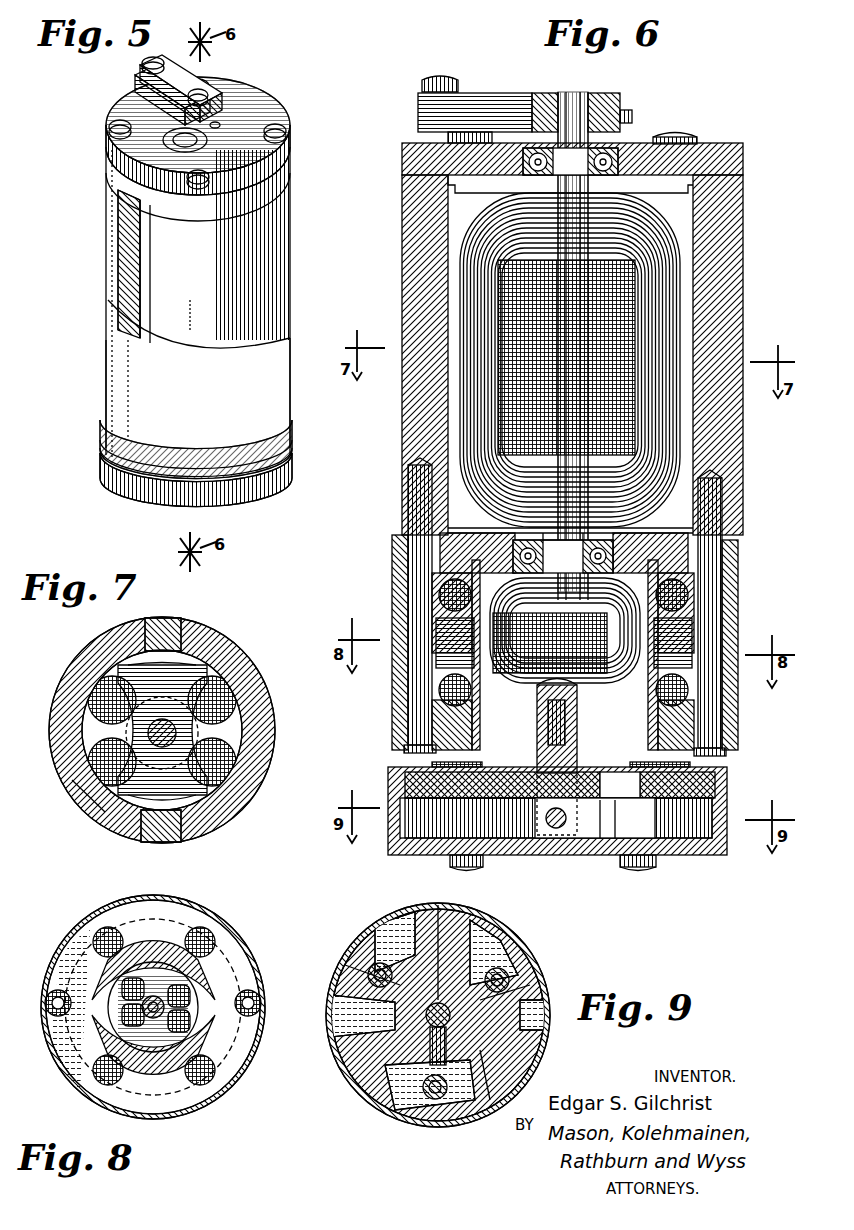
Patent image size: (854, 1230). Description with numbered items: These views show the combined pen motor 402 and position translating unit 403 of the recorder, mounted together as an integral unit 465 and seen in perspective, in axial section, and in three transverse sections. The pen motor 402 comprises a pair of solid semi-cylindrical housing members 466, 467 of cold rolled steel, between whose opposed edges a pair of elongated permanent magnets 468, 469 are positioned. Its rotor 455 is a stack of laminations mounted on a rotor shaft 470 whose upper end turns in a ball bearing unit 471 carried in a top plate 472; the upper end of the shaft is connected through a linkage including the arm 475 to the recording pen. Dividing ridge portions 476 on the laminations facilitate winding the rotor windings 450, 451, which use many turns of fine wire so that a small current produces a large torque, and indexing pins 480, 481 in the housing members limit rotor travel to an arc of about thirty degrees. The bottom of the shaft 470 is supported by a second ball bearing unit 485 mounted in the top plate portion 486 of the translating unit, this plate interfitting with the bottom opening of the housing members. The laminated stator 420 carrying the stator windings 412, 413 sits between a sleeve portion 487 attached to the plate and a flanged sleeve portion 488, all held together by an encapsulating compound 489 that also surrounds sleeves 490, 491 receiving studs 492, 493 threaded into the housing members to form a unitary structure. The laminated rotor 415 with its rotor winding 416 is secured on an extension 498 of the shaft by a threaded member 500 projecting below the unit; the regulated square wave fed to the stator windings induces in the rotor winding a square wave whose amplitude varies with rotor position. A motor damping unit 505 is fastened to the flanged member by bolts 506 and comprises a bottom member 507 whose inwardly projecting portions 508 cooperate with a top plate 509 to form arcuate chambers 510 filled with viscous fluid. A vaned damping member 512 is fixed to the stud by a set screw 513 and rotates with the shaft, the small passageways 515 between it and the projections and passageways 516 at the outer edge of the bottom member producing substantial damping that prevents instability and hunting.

In FIG. 5, the pen motor 402 is at (100, 171).
In FIG. 6, the pen motor 402 is at (796, 309).
In FIG. 7, the pen motor 402 is at (316, 779).
In FIG. 5, the position translating unit 403 is at (96, 363).
In FIG. 6, the position translating unit 403 is at (388, 671).
In FIG. 8, the position translating unit 403 is at (68, 1091).
In FIG. 6, the stator winding 412 is at (722, 586).
In FIG. 8, the stator winding 412 is at (210, 920).
In FIG. 6, the stator winding 413 is at (430, 590).
In FIG. 8, the stator winding 413 is at (95, 930).
In FIG. 6, the rotor 415 is at (625, 680).
In FIG. 8, the rotor 415 is at (146, 925).
In FIG. 6, the rotor winding 416 is at (565, 665).
In FIG. 8, the rotor winding 416 is at (190, 1005).
In FIG. 6, the stator 420 is at (722, 615).
In FIG. 8, the stator 420 is at (68, 950).
In FIG. 7, the rotor winding 450 is at (215, 690).
In FIG. 6, the rotor winding 451 is at (662, 240).
In FIG. 7, the rotor winding 451 is at (100, 757).
In FIG. 6, the rotor 455 is at (640, 422).
In FIG. 7, the rotor 455 is at (185, 668).
In FIG. 5, the integral unit 465 is at (293, 224).
In FIG. 6, the integral unit 465 is at (752, 264).
In FIG. 5, the semi-cylindrical housing member 466 is at (288, 262).
In FIG. 6, the semi-cylindrical housing member 466 is at (743, 285).
In FIG. 7, the semi-cylindrical housing member 466 is at (296, 690).
In FIG. 5, the semi-cylindrical housing member 467 is at (118, 265).
In FIG. 6, the semi-cylindrical housing member 467 is at (402, 285).
In FIG. 7, the semi-cylindrical housing member 467 is at (80, 652).
In FIG. 7, the permanent magnet 468 is at (158, 618).
In FIG. 5, the permanent magnet 469 is at (125, 290).
In FIG. 7, the permanent magnet 469 is at (141, 840).
In FIG. 5, the rotor shaft 470 is at (208, 98).
In FIG. 6, the rotor shaft 470 is at (584, 94).
In FIG. 7, the rotor shaft 470 is at (170, 718).
In FIG. 5, the ball bearing unit 471 is at (178, 146).
In FIG. 6, the ball bearing unit 471 is at (605, 148).
In FIG. 5, the top plate 472 is at (258, 108).
In FIG. 6, the top plate 472 is at (708, 160).
In FIG. 5, the arm 475 is at (135, 86).
In FIG. 6, the arm 475 is at (480, 93).
In FIG. 7, the dividing ridge portion 476 is at (108, 692).
In FIG. 5, the indexing pin 480 is at (188, 294).
In FIG. 7, the indexing pin 480 is at (248, 806).
In FIG. 5, the indexing pin 481 is at (104, 222).
In FIG. 7, the indexing pin 481 is at (85, 805).
In FIG. 6, the ball bearing unit 485 is at (612, 545).
In FIG. 6, the top plate portion 486 is at (495, 548).
In FIG. 6, the sleeve portion 487 is at (430, 605).
In FIG. 6, the flanged sleeve portion 488 is at (722, 712).
In FIG. 6, the encapsulating compound 489 is at (720, 735).
In FIG. 6, the sleeve 490 is at (404, 552).
In FIG. 8, the sleeve 490 is at (68, 962).
In FIG. 6, the sleeve 491 is at (722, 560).
In FIG. 8, the sleeve 491 is at (255, 992).
In FIG. 6, the stud 492 is at (404, 748).
In FIG. 8, the stud 492 is at (45, 1003).
In FIG. 6, the stud 493 is at (726, 760).
In FIG. 8, the stud 493 is at (262, 1003).
In FIG. 6, the shaft extension 498 is at (537, 722).
In FIG. 6, the threaded member 500 is at (537, 744).
In FIG. 9, the threaded member 500 is at (440, 903).
In FIG. 5, the motor damping unit 505 is at (92, 451).
In FIG. 6, the motor damping unit 505 is at (726, 850).
In FIG. 9, the motor damping unit 505 is at (556, 992).
In FIG. 6, the bolt 506 is at (450, 862).
In FIG. 9, the bolt 506 is at (372, 960).
In FIG. 5, the bottom member 507 is at (140, 485).
In FIG. 6, the bottom member 507 is at (670, 868).
In FIG. 9, the bottom member 507 is at (350, 1078).
In FIG. 9, the inwardly projecting portion 508 is at (402, 920).
In FIG. 5, the top plate 509 is at (130, 452).
In FIG. 6, the top plate 509 is at (432, 764).
In FIG. 9, the arcuate chamber 510 is at (470, 918).
In FIG. 6, the vaned damping member 512 is at (605, 840).
In FIG. 9, the vaned damping member 512 is at (528, 1038).
In FIG. 6, the set screw 513 is at (552, 838).
In FIG. 9, the set screw 513 is at (392, 1085).
In FIG. 9, the passageway 515 is at (510, 962).
In FIG. 9, the passageway 516 is at (528, 1068).